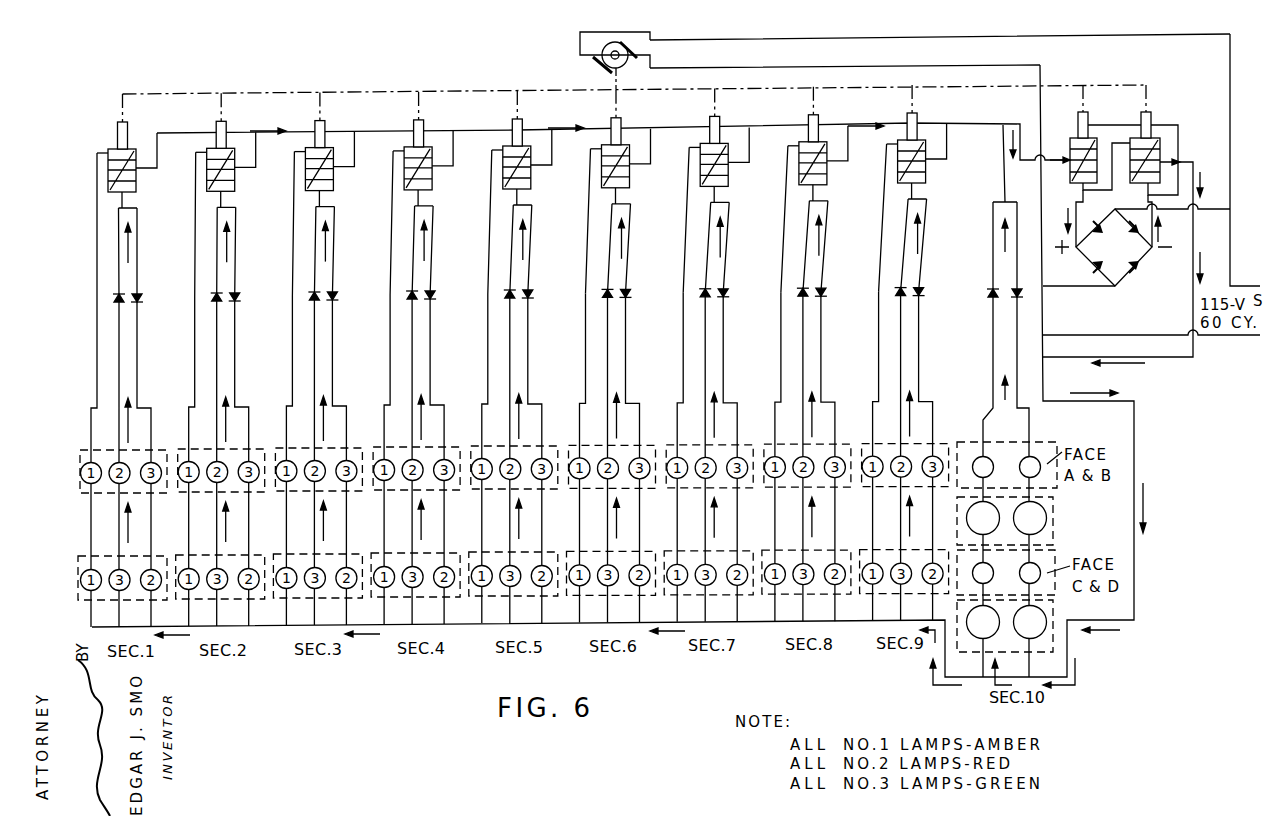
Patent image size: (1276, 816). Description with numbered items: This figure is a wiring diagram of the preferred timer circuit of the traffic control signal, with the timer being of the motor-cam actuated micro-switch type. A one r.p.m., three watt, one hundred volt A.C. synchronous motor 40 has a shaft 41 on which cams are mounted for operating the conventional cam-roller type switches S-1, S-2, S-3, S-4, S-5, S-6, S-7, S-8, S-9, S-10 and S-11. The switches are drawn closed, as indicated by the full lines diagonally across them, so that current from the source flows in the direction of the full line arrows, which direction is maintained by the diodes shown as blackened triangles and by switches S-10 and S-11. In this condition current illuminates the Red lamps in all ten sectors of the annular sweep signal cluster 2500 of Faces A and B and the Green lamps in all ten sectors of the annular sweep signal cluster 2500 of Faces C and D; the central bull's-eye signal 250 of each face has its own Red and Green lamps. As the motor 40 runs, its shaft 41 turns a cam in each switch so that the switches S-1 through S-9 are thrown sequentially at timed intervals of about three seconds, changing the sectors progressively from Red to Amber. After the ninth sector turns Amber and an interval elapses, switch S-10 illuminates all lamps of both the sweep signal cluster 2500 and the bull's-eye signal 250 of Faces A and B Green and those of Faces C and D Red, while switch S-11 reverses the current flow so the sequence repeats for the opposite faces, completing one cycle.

The synchronous motor 40 is at (632, 40).
The shaft 41 is at (216, 124).
The central bull's-eye signal 250 is at (1053, 620).
The annular sweep signal cluster 2500 is at (78, 566).
The cam-roller operated switch S-1 is at (137, 186).
The cam-roller operated switch S-2 is at (236, 185).
The cam-roller operated switch S-3 is at (334, 185).
The cam-roller operated switch S-4 is at (433, 184).
The cam-roller operated switch S-5 is at (532, 183).
The cam-roller operated switch S-6 is at (630, 182).
The cam-roller operated switch S-7 is at (729, 180).
The cam-roller operated switch S-8 is at (828, 179).
The cam-roller operated switch S-9 is at (927, 177).
The cam-roller operated switch S-10 is at (1097, 150).
The cam-roller operated switch S-11 is at (1160, 143).